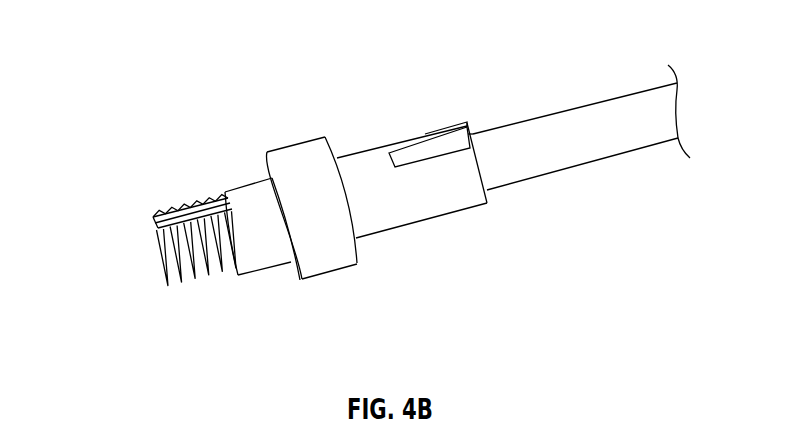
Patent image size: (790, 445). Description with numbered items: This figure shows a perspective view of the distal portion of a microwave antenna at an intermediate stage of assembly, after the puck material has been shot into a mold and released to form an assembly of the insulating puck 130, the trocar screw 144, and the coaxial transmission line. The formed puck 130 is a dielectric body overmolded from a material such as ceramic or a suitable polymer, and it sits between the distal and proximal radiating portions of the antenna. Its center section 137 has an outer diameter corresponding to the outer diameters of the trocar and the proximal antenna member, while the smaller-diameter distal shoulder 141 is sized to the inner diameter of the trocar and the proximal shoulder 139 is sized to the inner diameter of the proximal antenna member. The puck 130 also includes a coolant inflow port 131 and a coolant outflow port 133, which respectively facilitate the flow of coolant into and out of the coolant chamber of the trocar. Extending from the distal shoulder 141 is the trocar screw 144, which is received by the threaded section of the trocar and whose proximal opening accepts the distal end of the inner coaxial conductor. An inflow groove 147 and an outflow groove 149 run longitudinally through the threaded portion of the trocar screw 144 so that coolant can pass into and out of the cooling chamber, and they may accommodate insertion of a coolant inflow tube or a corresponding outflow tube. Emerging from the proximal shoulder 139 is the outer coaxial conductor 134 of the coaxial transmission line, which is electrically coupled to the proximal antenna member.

The insulating puck 130 is at (293, 146).
The coolant inflow port 131 is at (430, 150).
The coolant outflow port 133 is at (448, 213).
The outer coaxial conductor 134 is at (648, 85).
The center section 137 is at (331, 268).
The proximal shoulder 139 is at (427, 184).
The distal shoulder 141 is at (257, 264).
The trocar screw 144 is at (193, 202).
The inflow groove 147 is at (153, 210).
The outflow groove 149 is at (203, 282).